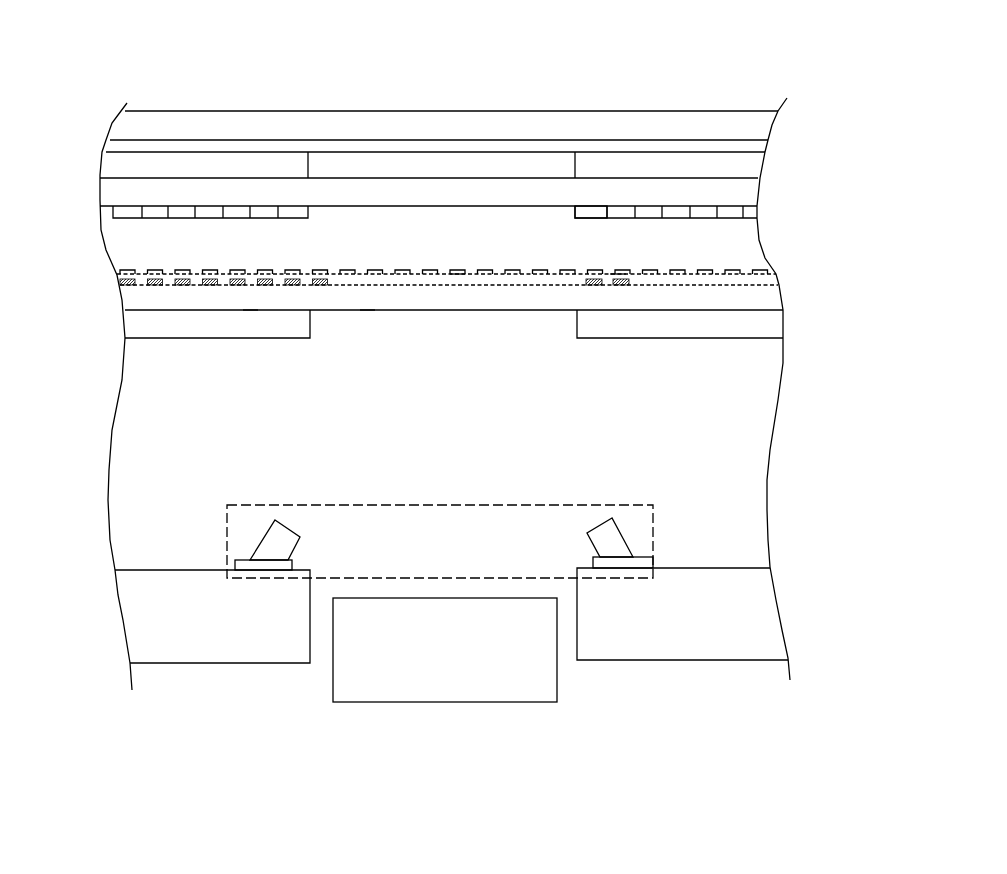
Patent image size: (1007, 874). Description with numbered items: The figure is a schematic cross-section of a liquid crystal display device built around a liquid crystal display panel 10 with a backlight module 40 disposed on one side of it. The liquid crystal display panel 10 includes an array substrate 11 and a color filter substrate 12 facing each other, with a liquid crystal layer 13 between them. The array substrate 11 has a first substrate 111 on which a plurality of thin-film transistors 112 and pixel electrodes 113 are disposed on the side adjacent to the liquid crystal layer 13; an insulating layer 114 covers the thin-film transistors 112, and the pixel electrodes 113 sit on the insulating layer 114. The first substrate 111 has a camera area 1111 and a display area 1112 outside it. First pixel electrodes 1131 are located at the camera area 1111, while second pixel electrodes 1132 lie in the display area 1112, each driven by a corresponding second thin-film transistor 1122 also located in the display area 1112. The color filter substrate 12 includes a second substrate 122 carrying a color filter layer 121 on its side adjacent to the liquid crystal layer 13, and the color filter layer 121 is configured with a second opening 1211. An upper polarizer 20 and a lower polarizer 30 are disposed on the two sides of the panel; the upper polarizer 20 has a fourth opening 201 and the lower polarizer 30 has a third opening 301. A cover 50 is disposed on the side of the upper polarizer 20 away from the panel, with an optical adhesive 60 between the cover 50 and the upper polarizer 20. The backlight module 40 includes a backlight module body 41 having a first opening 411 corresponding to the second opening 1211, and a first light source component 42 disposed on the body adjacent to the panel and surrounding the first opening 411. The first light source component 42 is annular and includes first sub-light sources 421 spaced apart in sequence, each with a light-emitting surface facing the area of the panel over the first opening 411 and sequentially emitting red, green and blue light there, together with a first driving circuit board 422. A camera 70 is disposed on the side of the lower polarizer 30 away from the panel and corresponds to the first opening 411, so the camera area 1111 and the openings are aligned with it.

The liquid crystal display panel 10 is at (90, 178).
The array substrate 11 is at (843, 238).
The first substrate 111 is at (740, 298).
The camera area 1111 is at (367, 298).
The display area 1112 is at (250, 300).
The thin-film transistors 112 is at (479, 167).
The second thin-film transistors 1122 is at (176, 270).
The pixel electrodes 113 is at (765, 272).
The first pixel electrodes 1131 is at (457, 272).
The second pixel electrodes 1132 is at (618, 272).
The insulating layer 114 is at (762, 275).
The color filter substrate 12 is at (843, 172).
The color filter layer 121 is at (745, 210).
The second opening 1211 is at (575, 207).
The second substrate 122 is at (742, 190).
The liquid crystal layer 13 is at (707, 242).
The upper polarizer 20 is at (403, 90).
The fourth opening 201 is at (403, 162).
The lower polarizer 30 is at (125, 330).
The third opening 301 is at (397, 330).
The backlight module 40 is at (52, 548).
The backlight module body 41 is at (230, 633).
The first opening 411 is at (310, 663).
The first light source component 42 is at (225, 545).
The first sub-light sources 421 is at (621, 548).
The first driving circuit board 422 is at (633, 552).
The cover 50 is at (113, 122).
The optical adhesive 60 is at (108, 141).
The camera 70 is at (485, 682).